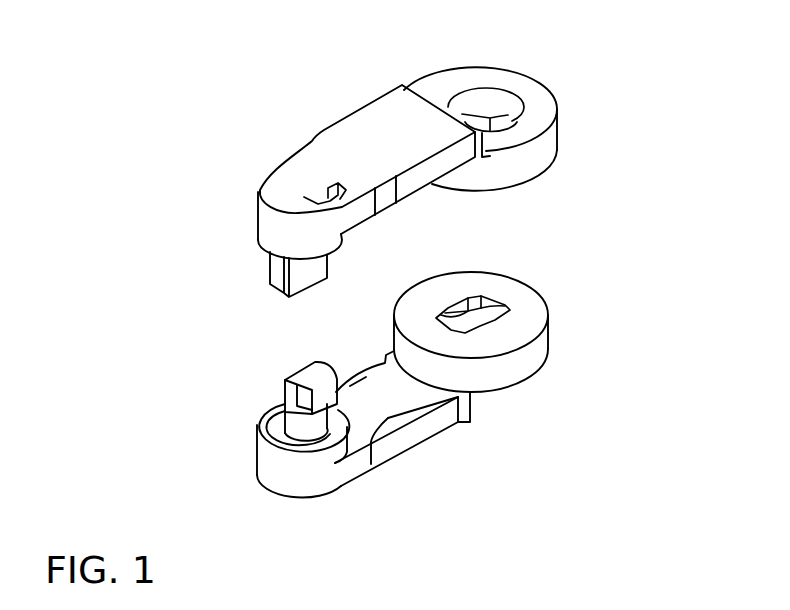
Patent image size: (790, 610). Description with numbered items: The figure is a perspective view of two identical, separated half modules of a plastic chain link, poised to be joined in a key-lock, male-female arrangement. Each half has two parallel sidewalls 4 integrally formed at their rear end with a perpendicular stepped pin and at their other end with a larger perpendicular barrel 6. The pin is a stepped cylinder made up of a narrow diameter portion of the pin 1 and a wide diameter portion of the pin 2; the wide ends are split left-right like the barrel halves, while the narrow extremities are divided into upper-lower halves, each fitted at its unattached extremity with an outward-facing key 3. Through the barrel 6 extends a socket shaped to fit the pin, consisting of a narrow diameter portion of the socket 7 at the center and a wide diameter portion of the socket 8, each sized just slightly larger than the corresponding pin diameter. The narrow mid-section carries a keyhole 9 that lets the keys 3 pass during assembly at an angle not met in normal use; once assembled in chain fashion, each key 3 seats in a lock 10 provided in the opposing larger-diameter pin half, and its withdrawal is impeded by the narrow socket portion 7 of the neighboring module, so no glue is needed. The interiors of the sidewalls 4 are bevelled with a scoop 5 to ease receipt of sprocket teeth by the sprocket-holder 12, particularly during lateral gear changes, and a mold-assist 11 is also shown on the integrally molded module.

The narrow diameter portion of the pin 1 is at (182, 349).
The wide diameter portion of the pin 2 is at (188, 451).
The key 3 is at (178, 382).
The sidewalls 4 is at (363, 285).
The scoop 5 is at (535, 430).
The barrel 6 is at (546, 332).
The narrow diameter portion of the socket 7 is at (567, 317).
The wide diameter portion of the socket 8 is at (551, 129).
The keyhole 9 is at (572, 263).
The lock 10 is at (579, 73).
The mold-assist 11 is at (187, 152).
The sprocket-holder 12 is at (530, 431).